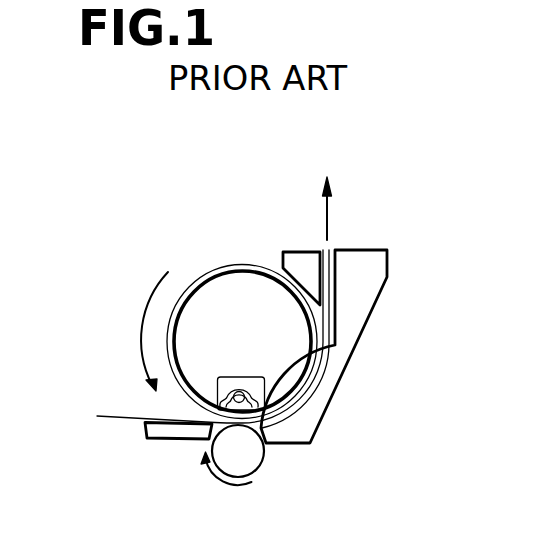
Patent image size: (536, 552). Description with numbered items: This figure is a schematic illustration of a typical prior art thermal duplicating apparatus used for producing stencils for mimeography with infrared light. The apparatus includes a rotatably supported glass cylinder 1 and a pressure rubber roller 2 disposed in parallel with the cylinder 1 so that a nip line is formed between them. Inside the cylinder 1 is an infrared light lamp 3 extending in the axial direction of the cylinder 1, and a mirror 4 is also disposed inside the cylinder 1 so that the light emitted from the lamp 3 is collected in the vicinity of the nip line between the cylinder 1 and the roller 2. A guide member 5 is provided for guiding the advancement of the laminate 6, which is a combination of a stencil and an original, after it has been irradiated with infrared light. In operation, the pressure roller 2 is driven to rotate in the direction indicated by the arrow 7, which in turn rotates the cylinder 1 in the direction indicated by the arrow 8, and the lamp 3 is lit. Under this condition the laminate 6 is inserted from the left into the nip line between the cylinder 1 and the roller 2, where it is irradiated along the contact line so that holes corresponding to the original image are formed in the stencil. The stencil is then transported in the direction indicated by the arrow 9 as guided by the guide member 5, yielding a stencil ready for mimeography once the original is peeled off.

The glass cylinder 1 is at (226, 264).
The pressure rubber roller 2 is at (264, 463).
The infrared light lamp 3 is at (247, 386).
The mirror 4 is at (225, 378).
The guide member 5 is at (347, 323).
The laminate 6 is at (107, 418).
The arrow 7 is at (212, 480).
The arrow 8 is at (146, 332).
The arrow 9 is at (328, 208).